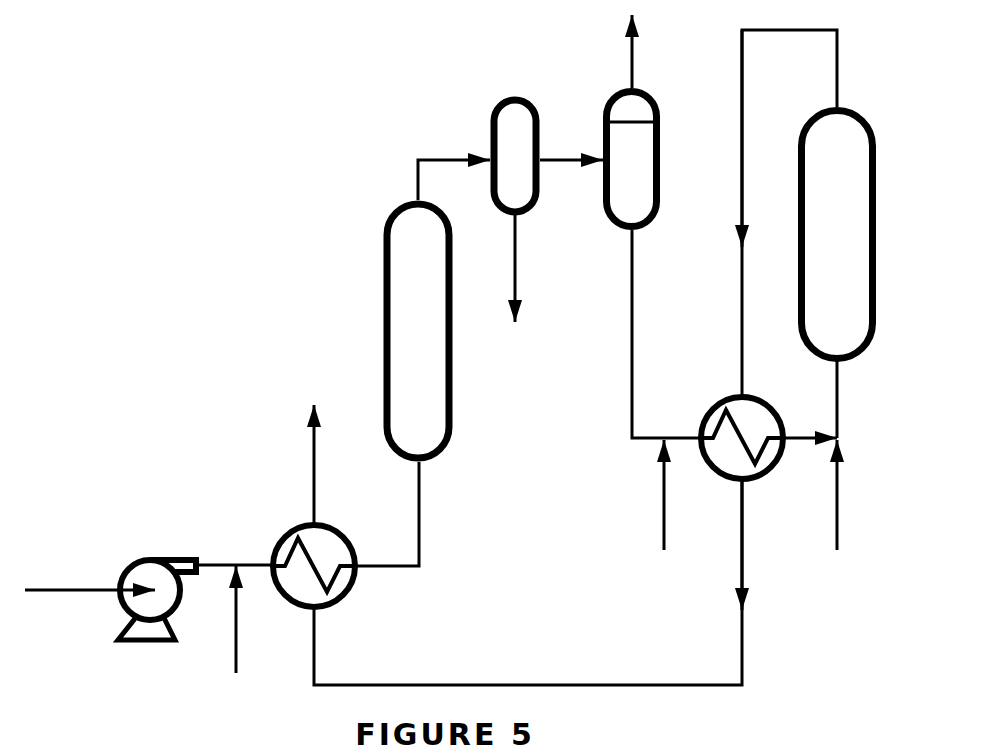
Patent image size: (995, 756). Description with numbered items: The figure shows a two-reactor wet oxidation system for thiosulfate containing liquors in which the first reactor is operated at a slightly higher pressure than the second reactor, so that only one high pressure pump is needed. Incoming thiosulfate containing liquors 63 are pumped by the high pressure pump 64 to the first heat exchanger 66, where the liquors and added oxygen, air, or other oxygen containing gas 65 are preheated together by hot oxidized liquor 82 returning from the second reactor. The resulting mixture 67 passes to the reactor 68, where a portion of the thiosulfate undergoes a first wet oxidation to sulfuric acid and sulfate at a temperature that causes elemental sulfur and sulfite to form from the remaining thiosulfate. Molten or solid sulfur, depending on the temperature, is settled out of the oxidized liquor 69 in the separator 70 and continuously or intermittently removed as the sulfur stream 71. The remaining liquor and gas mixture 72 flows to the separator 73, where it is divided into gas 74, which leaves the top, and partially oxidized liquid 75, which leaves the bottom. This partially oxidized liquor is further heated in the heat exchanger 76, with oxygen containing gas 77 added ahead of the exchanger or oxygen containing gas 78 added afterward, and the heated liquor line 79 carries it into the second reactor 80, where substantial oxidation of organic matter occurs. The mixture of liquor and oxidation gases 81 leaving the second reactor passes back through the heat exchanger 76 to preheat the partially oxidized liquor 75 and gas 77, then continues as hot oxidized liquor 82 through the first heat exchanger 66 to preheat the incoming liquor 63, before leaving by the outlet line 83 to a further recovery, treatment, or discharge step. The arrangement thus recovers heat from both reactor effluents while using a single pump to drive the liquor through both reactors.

The thiosulfate containing liquors 63 is at (50, 588).
The high pressure pump 64 is at (127, 613).
The oxygen containing gas 65 is at (230, 632).
The first heat exchanger 66 is at (318, 593).
The resulting mixture 67 is at (420, 532).
The reactor 68 is at (398, 315).
The oxidized liquor 69 is at (438, 157).
The separator 70 is at (523, 110).
The sulfur stream 71 is at (515, 280).
The liquor and gas mixture 72 is at (566, 160).
The separator 73 is at (643, 188).
The gas 74 is at (635, 70).
The partially oxidized liquid 75 is at (632, 360).
The heat exchanger 76 is at (747, 465).
The oxygen containing gas 77 is at (663, 495).
The oxygen containing gas 78 is at (838, 500).
The heated liquor line 79 is at (838, 410).
The second reactor 80 is at (830, 295).
The mixture of liquor and oxidation gases 81 is at (790, 32).
The hot oxidized liquor 82 is at (742, 648).
The outlet line 83 is at (313, 490).